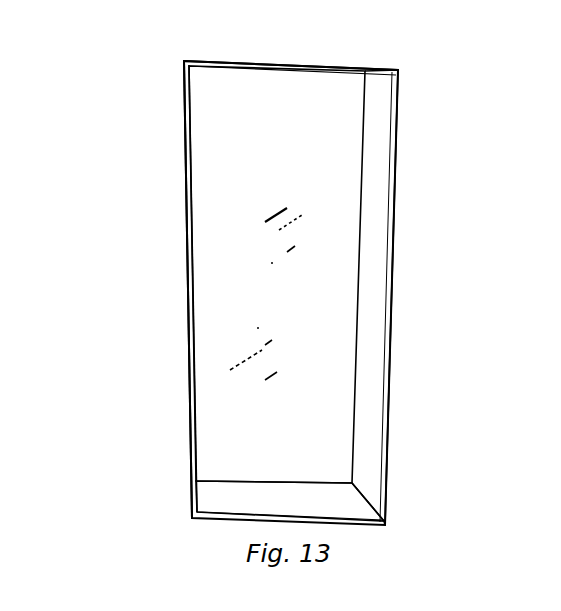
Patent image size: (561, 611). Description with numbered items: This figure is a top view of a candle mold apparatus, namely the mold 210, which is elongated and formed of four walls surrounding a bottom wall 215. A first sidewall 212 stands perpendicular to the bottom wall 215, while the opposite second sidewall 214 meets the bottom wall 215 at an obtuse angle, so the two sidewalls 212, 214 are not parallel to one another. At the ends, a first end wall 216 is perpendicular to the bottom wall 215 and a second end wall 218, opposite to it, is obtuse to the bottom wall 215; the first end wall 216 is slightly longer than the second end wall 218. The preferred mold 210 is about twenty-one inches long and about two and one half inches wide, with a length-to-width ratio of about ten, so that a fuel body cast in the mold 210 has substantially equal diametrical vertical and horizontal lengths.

The mold 210 is at (168, 179).
The first sidewall 212 is at (183, 105).
The second sidewall 214 is at (380, 118).
The bottom wall 215 is at (280, 95).
The first end wall 216 is at (240, 65).
The second end wall 218 is at (217, 495).